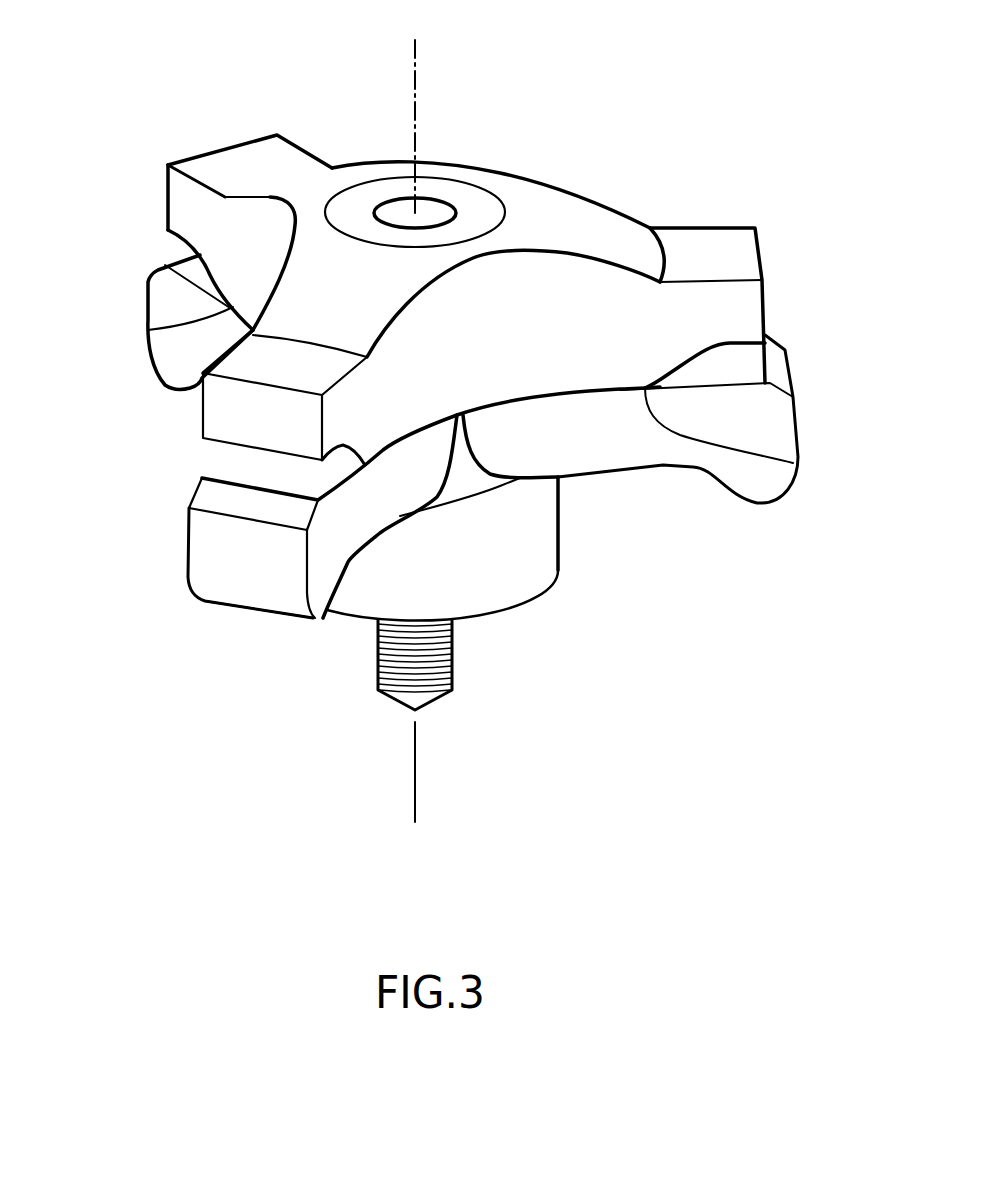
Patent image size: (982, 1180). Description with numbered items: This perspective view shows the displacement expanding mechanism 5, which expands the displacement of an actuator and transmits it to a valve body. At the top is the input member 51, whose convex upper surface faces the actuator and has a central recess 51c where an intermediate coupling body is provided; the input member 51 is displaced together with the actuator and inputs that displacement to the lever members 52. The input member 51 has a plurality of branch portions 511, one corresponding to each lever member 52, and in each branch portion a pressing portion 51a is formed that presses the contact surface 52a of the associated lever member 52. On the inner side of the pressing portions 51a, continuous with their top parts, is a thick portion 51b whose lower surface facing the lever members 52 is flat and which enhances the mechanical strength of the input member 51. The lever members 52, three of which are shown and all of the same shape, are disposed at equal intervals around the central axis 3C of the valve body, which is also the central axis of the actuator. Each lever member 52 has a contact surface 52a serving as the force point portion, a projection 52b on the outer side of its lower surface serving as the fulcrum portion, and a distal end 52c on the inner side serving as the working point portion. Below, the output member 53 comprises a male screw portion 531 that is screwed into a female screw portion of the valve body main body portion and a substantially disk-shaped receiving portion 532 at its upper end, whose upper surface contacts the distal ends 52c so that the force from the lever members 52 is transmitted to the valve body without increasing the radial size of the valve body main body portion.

The displacement expanding mechanism 5 is at (133, 128).
The central axis 3C is at (413, 416).
The input member 51 is at (525, 182).
The branch portions 511 is at (240, 163).
The pressing portions 51a is at (148, 330).
The thick portion 51b is at (485, 398).
The recess 51c is at (440, 212).
The lever members 52 is at (148, 292).
The contact surface 52a is at (477, 365).
The projection 52b is at (416, 531).
The distal end 52c is at (486, 516).
The output member 53 is at (605, 670).
The male screw portion 531 is at (452, 655).
The receiving portion 532 is at (513, 567).